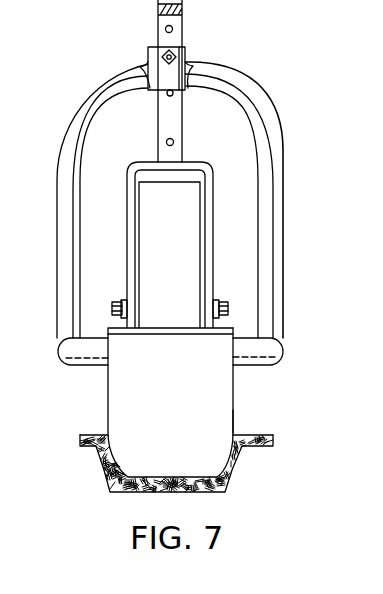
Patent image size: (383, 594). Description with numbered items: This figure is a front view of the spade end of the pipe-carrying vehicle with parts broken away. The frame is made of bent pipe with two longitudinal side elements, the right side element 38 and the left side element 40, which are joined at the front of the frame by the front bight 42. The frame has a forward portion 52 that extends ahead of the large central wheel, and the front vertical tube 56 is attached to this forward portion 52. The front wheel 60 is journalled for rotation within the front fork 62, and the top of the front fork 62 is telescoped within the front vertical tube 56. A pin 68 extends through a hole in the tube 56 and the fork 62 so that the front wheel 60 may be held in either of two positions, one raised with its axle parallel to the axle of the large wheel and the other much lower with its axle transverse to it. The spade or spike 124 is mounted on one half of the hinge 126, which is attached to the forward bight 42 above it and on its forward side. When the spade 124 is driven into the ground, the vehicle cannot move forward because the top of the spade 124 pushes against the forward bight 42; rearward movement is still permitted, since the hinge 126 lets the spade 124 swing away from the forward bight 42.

The right side element 38 is at (63, 352).
The left side element 40 is at (283, 357).
The front bight 42 is at (247, 342).
The forward portion of the frame 52 is at (252, 379).
The front vertical tube 56 is at (186, 58).
The front wheel 60 is at (179, 250).
The front fork 62 is at (201, 163).
The pin 68 is at (165, 55).
The spade 124 is at (172, 403).
The hinge 126 is at (182, 330).